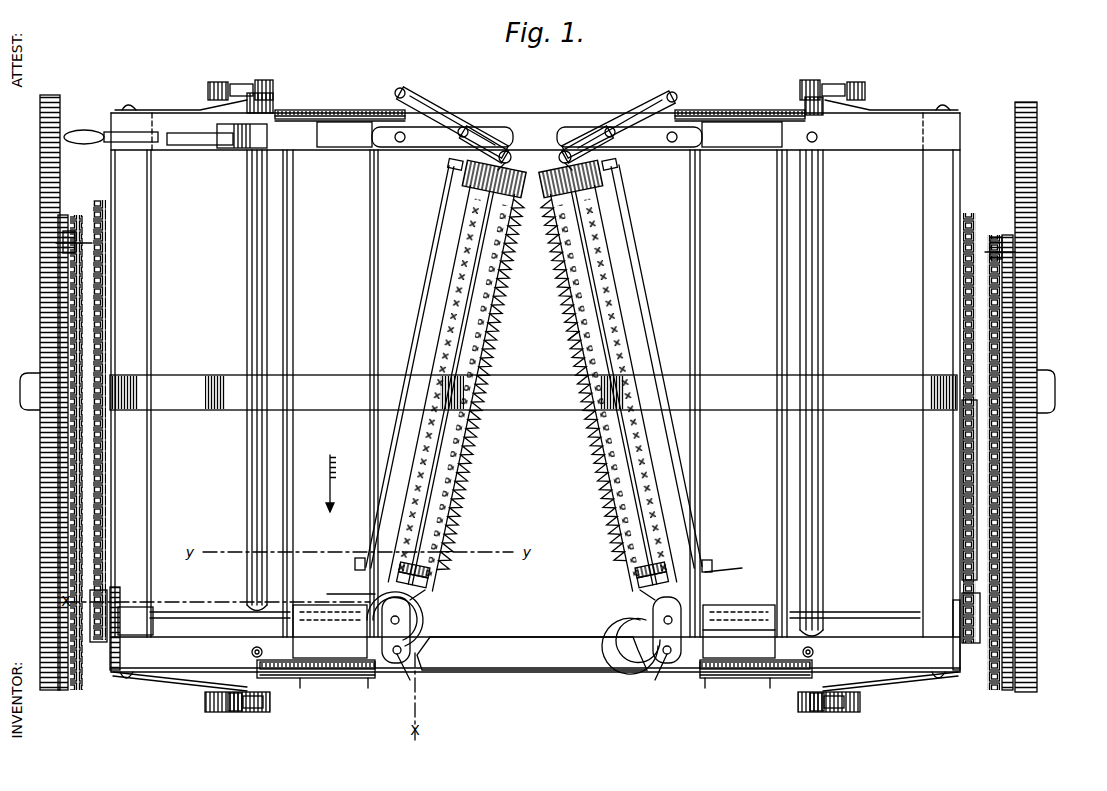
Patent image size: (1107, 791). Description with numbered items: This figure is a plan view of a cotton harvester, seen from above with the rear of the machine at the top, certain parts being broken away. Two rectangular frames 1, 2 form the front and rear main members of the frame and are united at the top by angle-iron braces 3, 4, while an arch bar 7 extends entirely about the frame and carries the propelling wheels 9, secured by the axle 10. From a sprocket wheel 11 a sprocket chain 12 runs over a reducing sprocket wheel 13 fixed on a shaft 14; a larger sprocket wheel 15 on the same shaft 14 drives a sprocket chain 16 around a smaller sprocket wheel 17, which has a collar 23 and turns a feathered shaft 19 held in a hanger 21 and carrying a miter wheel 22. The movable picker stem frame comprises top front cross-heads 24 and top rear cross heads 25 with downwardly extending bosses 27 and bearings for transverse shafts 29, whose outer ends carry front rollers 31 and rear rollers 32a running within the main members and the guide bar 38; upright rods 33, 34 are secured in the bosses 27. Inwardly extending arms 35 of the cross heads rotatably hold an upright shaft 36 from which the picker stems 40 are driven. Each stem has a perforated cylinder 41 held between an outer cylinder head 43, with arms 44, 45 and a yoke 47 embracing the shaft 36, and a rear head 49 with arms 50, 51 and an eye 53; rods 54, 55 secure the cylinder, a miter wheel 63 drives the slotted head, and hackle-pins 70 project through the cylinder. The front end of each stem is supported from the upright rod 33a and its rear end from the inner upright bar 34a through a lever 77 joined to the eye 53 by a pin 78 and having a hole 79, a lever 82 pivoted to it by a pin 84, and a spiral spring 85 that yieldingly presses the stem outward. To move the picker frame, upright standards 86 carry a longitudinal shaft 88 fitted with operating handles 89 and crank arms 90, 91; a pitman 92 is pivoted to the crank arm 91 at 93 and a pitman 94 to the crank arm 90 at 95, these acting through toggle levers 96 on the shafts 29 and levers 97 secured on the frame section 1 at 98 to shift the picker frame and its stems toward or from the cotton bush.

The rectangular frame 1 is at (535, 392).
The rectangular frame 2 is at (536, 140).
The brace 3 is at (137, 393).
The brace 4 is at (931, 393).
The arch bar 7 is at (533, 392).
The propelling wheels 9 is at (40, 298).
The axle 10 is at (545, 406).
The sprocket wheel 11 is at (58, 440).
The sprocket chain 12 is at (70, 346).
The reducing sprocket wheel 13 is at (1048, 228).
The shaft 14 is at (83, 240).
The sprocket wheel 15 is at (106, 283).
The sprocket chain 16 is at (977, 570).
The sprocket wheel 17 is at (533, 620).
The feathered shaft 19 is at (535, 624).
The hanger 21 is at (534, 631).
The miter wheel 22 is at (690, 608).
The collar 23 is at (110, 650).
The top front cross-heads 24 is at (534, 661).
The top rear cross heads 25 is at (549, 134).
The bosses 27 is at (404, 652).
The transverse shafts 29 is at (772, 472).
The rollers 31 is at (537, 699).
The rear rollers 32a is at (280, 110).
The upright rods 33 is at (270, 680).
The upright rod 33a is at (533, 679).
The upright rods 34 is at (817, 142).
The inner upright bar 34a is at (403, 143).
The inwardly extending arms 35 is at (400, 622).
The upright shaft 36 is at (423, 610).
The bar 38 is at (335, 112).
The picker stems 40 is at (532, 388).
The cylinder 41 is at (578, 333).
The outer cylinder head 43 is at (533, 583).
The arm 44 is at (436, 583).
The arm 45 is at (530, 563).
The yoke 47 is at (532, 596).
The rear head 49 is at (535, 161).
The arm 50 is at (478, 190).
The arm 51 is at (455, 178).
The eye 53 is at (508, 150).
The rod 54 is at (662, 313).
The rod 55 is at (420, 333).
The miter wheel 63 is at (534, 576).
The hackle-pins 70 is at (566, 300).
The lever 77 is at (536, 115).
The pin 78 is at (365, 366).
The hole 79 is at (641, 334).
The lever 82 is at (660, 150).
The pin 84 is at (466, 128).
The spiral spring 85 is at (536, 114).
The upright standards 86 is at (235, 149).
The longitudinal shaft 88 is at (268, 92).
The operating handles 89 is at (190, 146).
The crank arm 90 is at (537, 716).
The crank arms 91 is at (262, 78).
The pitman 92 is at (240, 82).
The pivot 93 is at (216, 80).
The pitman 94 is at (236, 690).
The pivot 95 is at (466, 438).
The lever 96 is at (318, 109).
The levers 97 is at (168, 110).
The pivot 98 is at (130, 108).